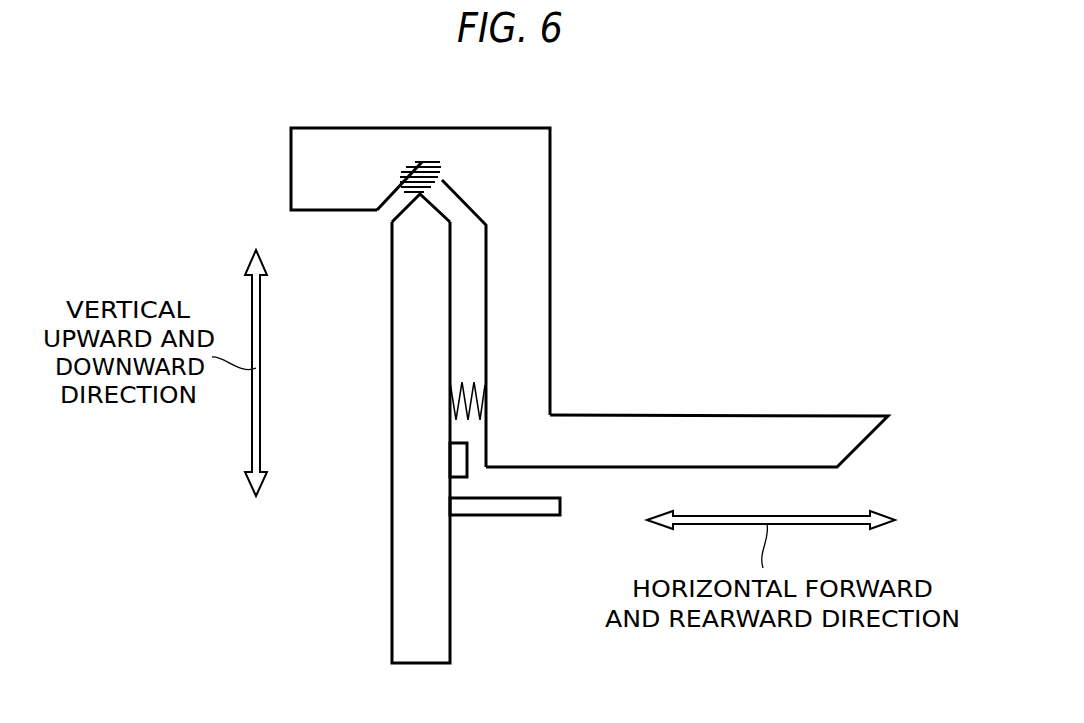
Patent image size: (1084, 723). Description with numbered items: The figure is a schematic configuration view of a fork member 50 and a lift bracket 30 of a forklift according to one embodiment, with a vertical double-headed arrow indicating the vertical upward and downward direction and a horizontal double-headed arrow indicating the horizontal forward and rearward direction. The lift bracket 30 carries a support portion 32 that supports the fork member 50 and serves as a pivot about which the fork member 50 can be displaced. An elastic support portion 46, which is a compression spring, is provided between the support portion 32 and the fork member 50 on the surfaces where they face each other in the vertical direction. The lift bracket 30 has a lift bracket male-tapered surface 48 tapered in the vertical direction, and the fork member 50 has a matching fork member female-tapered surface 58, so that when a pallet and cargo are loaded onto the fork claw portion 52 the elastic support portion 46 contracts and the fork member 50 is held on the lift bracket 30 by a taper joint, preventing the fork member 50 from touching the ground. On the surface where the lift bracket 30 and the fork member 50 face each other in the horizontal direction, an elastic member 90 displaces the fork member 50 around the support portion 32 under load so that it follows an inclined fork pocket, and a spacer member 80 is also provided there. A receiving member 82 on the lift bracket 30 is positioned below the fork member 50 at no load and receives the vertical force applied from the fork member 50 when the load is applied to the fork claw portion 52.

The lift bracket 30 is at (398, 510).
The support portion 32 is at (422, 165).
The elastic support portion 46 is at (442, 190).
The lift bracket male-tapered surface 48 is at (395, 206).
The fork member 50 is at (528, 162).
The fork claw portion 52 is at (825, 428).
The fork member female-tapered surface 58 is at (388, 205).
The spacer member 80 is at (462, 455).
The receiving member 82 is at (525, 508).
The elastic member 90 is at (468, 382).